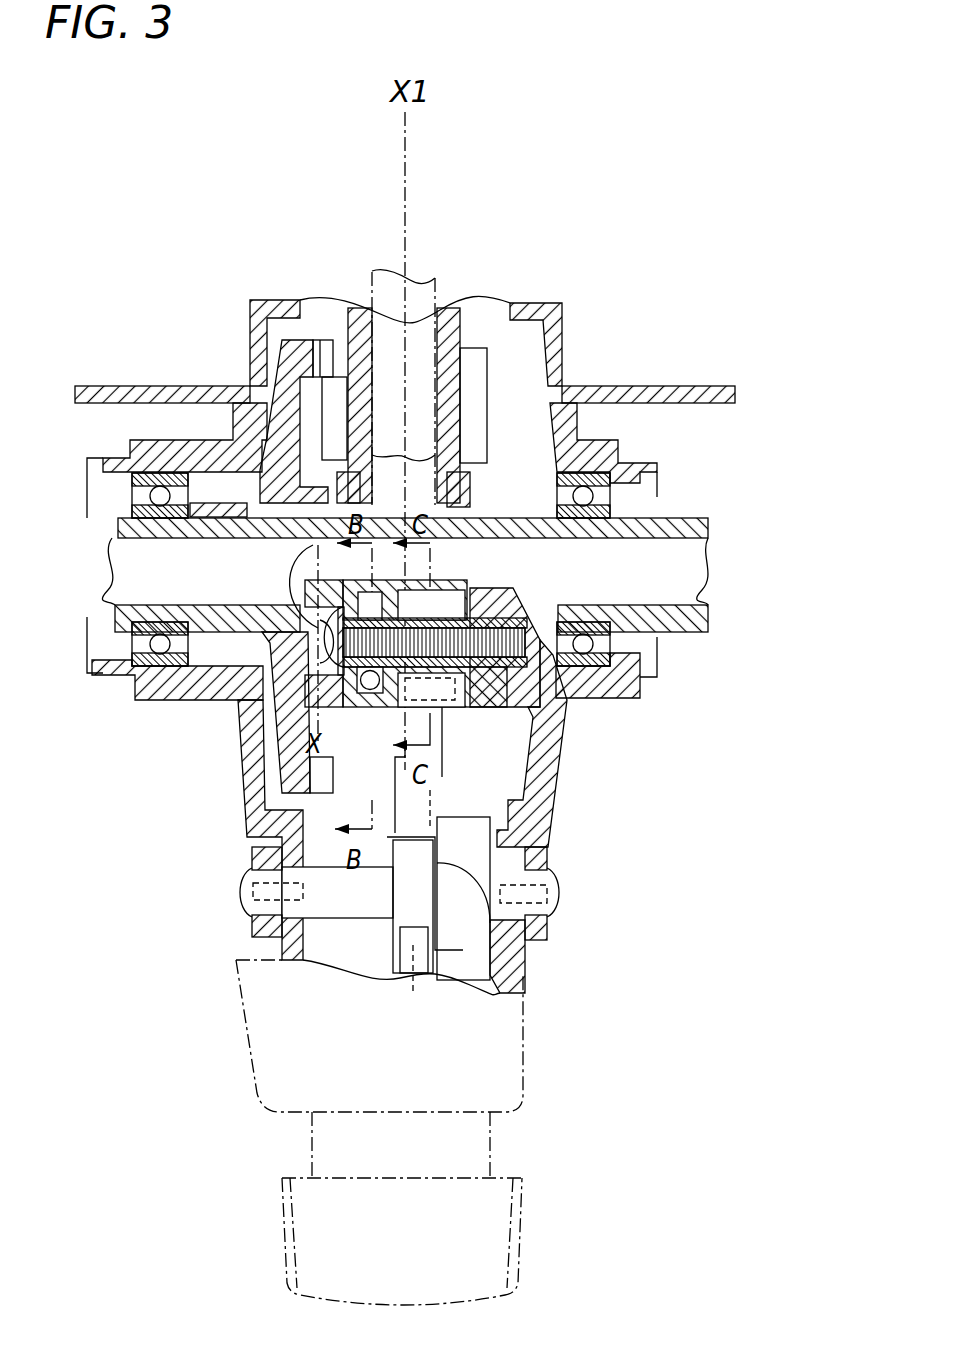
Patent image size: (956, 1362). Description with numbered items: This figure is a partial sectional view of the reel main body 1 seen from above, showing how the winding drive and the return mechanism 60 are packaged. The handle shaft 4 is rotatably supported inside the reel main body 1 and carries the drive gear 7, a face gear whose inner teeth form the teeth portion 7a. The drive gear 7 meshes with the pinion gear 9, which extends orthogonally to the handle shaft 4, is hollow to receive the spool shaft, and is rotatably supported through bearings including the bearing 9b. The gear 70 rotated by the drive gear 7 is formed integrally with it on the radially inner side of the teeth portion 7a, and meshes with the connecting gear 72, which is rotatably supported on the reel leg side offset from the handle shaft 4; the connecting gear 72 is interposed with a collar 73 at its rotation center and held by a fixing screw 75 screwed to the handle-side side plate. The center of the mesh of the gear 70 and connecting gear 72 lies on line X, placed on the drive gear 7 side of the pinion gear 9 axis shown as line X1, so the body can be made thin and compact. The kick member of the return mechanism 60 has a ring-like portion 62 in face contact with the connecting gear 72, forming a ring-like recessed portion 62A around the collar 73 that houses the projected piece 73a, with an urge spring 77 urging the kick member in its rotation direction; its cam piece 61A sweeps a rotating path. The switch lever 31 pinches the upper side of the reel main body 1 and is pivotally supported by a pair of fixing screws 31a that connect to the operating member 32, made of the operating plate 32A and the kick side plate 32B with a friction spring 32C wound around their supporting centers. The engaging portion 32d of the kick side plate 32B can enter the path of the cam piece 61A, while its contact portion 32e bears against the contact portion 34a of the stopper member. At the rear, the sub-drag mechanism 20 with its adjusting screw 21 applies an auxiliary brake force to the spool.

The reel main body 1 is at (243, 778).
The handle shaft 4 is at (697, 527).
The drive gear 7 is at (297, 352).
The teeth portion 7a is at (320, 340).
The pinion gear 9 is at (462, 350).
The bearing 9b is at (470, 490).
The sub-drag mechanism 20 is at (552, 1155).
The adjusting screw 21 is at (493, 1237).
The switch lever 31 is at (252, 855).
The fixing screw 31a is at (240, 893).
The operating member 32 is at (512, 978).
The operating plate 32A is at (473, 960).
The kick side plate 32B is at (407, 898).
The friction spring 32C is at (490, 920).
The engaging portion 32d is at (433, 712).
The contact portion 32e is at (388, 975).
The contact portion 34a is at (415, 965).
The return mechanism 60 is at (508, 723).
The cam piece 61A is at (483, 560).
The ring-like portion 62 is at (492, 562).
The ring-like recessed portion 62A is at (593, 512).
The gear 70 is at (313, 488).
The connecting gear 72 is at (302, 682).
The collar 73 is at (410, 595).
The projected piece 73a is at (330, 668).
The fixing screw 75 is at (500, 622).
The urge spring 77 is at (369, 689).